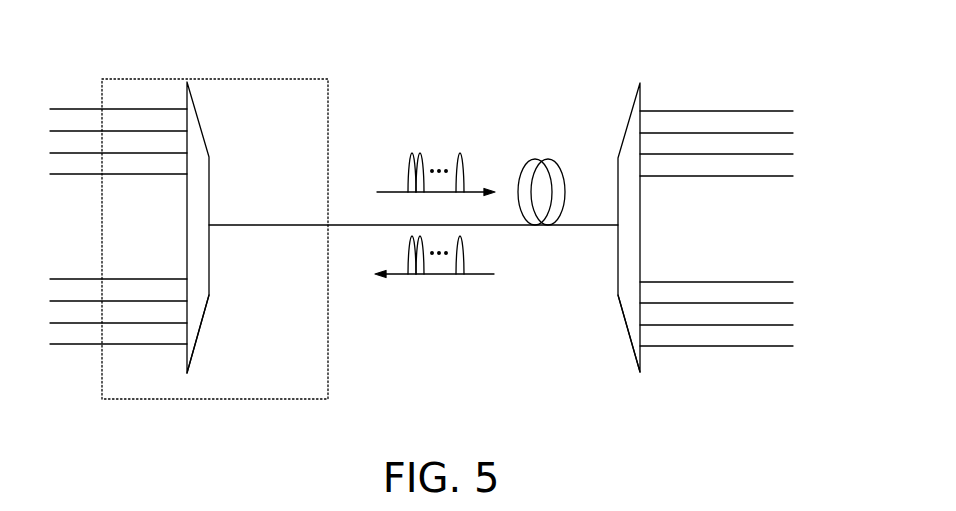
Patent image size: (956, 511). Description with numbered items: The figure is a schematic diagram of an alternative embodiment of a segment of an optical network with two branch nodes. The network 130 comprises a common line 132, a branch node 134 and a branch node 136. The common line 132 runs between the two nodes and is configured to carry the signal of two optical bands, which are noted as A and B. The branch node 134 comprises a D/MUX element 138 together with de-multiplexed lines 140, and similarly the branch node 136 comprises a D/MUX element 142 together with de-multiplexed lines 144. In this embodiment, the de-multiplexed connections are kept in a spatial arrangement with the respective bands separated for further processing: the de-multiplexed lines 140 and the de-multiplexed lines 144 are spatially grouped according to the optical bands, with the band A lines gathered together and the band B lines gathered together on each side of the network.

The network 130 is at (477, 356).
The common line 132 is at (342, 223).
The branch node 134 is at (219, 111).
The branch node 136 is at (606, 125).
The D/MUX element 138 is at (207, 309).
The de-multiplexed lines 140 is at (163, 367).
The D/MUX element 142 is at (617, 287).
The de-multiplexed lines 144 is at (690, 374).